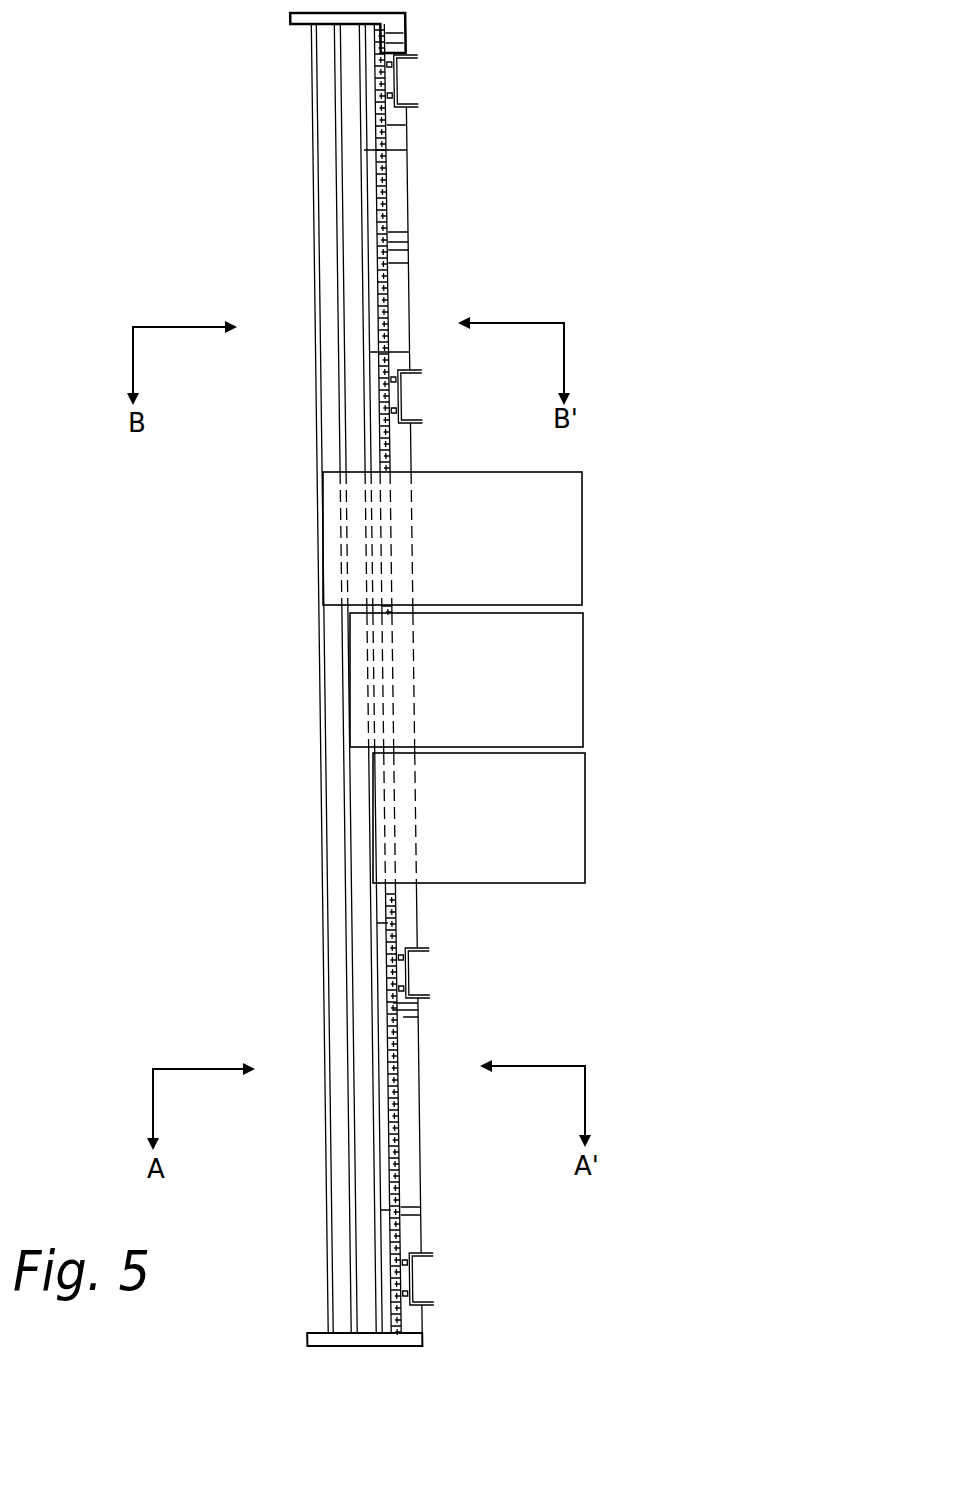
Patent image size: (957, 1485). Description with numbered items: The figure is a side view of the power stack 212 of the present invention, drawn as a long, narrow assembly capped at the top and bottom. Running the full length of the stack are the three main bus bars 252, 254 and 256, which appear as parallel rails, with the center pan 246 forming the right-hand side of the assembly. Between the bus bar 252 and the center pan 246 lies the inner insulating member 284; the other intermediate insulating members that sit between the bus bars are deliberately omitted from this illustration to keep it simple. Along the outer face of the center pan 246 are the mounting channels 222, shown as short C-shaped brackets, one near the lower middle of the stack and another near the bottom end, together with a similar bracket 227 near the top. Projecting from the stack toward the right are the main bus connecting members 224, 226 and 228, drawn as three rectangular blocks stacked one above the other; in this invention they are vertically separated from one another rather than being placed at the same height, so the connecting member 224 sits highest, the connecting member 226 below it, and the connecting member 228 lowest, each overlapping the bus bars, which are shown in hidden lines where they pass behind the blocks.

The power stack 212 is at (222, 300).
The mounting channels 222 is at (431, 998).
The main bus connecting member 224 is at (469, 551).
The main bus connecting member 226 is at (469, 698).
The upper bracket 227 is at (416, 55).
The main bus connecting member 228 is at (469, 833).
The center pan 246 is at (398, 187).
The main bus bar 252 is at (387, 150).
The main bus bar 254 is at (343, 401).
The main bus bar 256 is at (317, 444).
The inner insulating member 284 is at (387, 126).